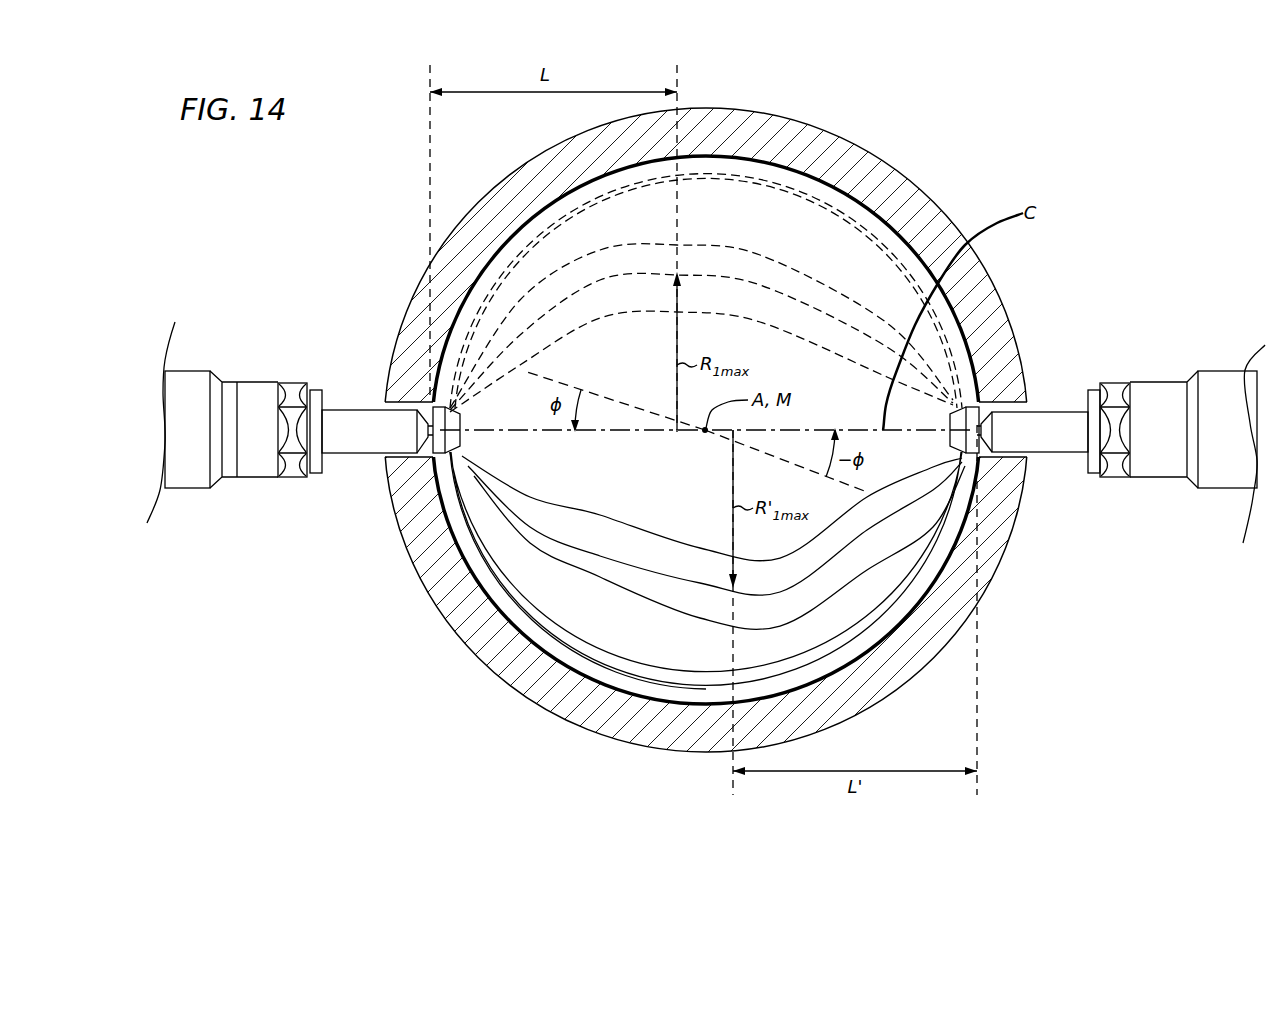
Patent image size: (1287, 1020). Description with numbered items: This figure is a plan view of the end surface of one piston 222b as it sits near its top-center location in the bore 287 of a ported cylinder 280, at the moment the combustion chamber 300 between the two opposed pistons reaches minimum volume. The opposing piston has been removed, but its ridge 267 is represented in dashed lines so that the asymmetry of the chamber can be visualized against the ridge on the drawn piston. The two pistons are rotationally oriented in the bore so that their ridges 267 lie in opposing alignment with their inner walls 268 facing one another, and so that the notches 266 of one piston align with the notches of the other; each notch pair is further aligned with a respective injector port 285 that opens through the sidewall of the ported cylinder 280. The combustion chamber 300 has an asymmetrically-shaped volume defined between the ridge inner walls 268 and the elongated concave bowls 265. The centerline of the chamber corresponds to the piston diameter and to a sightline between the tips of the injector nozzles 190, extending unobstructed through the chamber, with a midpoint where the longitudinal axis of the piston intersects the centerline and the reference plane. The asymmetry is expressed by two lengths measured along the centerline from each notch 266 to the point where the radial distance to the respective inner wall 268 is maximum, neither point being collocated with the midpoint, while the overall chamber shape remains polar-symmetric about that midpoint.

The injector nozzles 190 is at (417, 433).
The piston 222b is at (933, 563).
The elongated concave bowls 265 is at (603, 343).
The notches 266 is at (440, 445).
The ridges 267 is at (737, 267).
The ridge inner walls 268 is at (743, 307).
The ported cylinder 280 is at (738, 108).
The injector port 285 is at (423, 410).
The bore 287 is at (812, 176).
The combustion chamber 300 is at (618, 477).